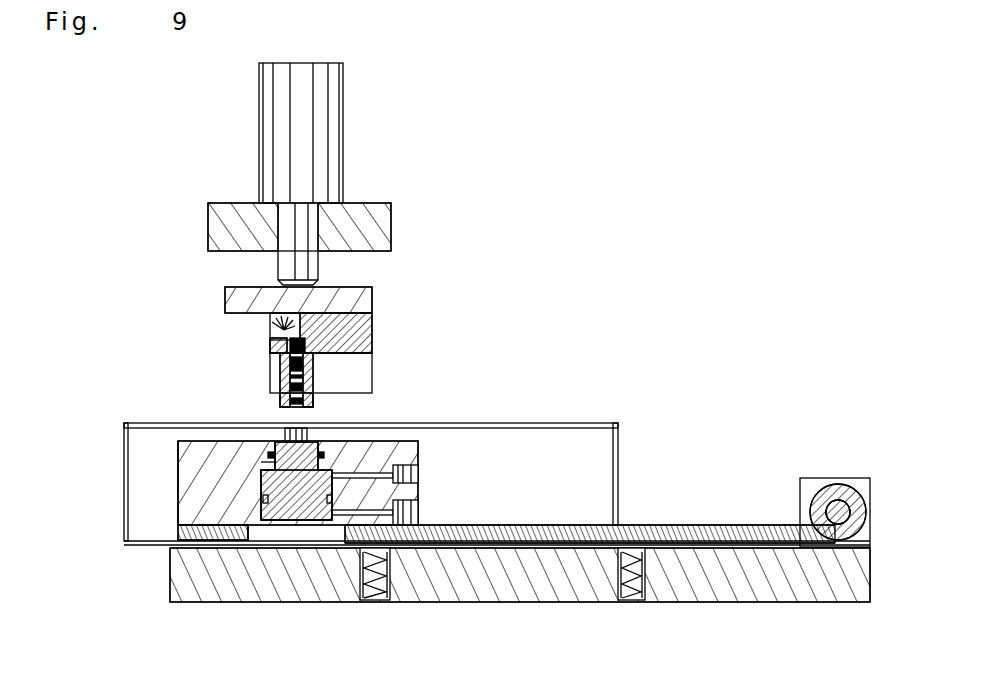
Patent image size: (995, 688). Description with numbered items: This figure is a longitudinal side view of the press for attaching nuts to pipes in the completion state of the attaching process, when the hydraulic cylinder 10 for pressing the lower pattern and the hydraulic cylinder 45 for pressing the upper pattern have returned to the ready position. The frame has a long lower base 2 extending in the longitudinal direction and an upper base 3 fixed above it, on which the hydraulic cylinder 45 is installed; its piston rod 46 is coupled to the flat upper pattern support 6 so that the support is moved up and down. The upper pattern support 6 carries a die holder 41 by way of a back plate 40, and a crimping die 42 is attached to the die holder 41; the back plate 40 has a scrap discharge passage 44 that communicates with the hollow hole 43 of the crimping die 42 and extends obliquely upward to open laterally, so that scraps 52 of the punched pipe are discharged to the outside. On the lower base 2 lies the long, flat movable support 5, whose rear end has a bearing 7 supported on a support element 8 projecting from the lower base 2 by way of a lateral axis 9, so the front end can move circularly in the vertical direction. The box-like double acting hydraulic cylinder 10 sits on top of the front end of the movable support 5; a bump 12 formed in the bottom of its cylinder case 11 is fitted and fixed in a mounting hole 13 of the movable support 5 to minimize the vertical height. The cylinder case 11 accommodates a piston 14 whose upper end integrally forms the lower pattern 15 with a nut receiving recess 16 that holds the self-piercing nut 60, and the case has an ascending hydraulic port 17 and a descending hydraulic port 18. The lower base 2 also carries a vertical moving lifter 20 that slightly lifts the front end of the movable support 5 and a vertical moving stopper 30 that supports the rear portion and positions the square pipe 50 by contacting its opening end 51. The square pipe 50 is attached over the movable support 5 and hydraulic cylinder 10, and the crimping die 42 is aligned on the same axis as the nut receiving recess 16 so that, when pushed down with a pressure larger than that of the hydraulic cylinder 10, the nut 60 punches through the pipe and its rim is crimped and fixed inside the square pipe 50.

The lower base 2 is at (495, 578).
The upper base 3 is at (366, 213).
The movable support 5 is at (672, 525).
The upper pattern support 6 is at (372, 293).
The bearing 7 is at (855, 484).
The support element 8 is at (807, 480).
The lateral axis 9 is at (830, 515).
The hydraulic cylinder for pressing the lower pattern 10 is at (178, 498).
The cylinder case 11 is at (200, 483).
The bump 12 is at (297, 535).
The mounting hole 13 is at (257, 545).
The piston 14 is at (178, 528).
The lower pattern 15 is at (265, 462).
The nut receiving recess 16 is at (268, 456).
The ascending hydraulic port 17 is at (398, 502).
The descending hydraulic port 18 is at (395, 472).
The vertical moving lifter 20 is at (355, 575).
The vertical moving stopper 30 is at (640, 576).
The back plate 40 is at (372, 330).
The die holder 41 is at (363, 368).
The crimping die 42 is at (313, 395).
The hollow hole 43 is at (290, 372).
The scrap discharge passage 44 is at (278, 340).
The hydraulic cylinder for pressing the upper pattern 45 is at (270, 95).
The piston rod 46 is at (290, 228).
The square pipe 50 is at (485, 423).
The opening end 51 is at (620, 472).
The scraps 52 is at (272, 323).
The self-piercing nut 60 is at (275, 422).